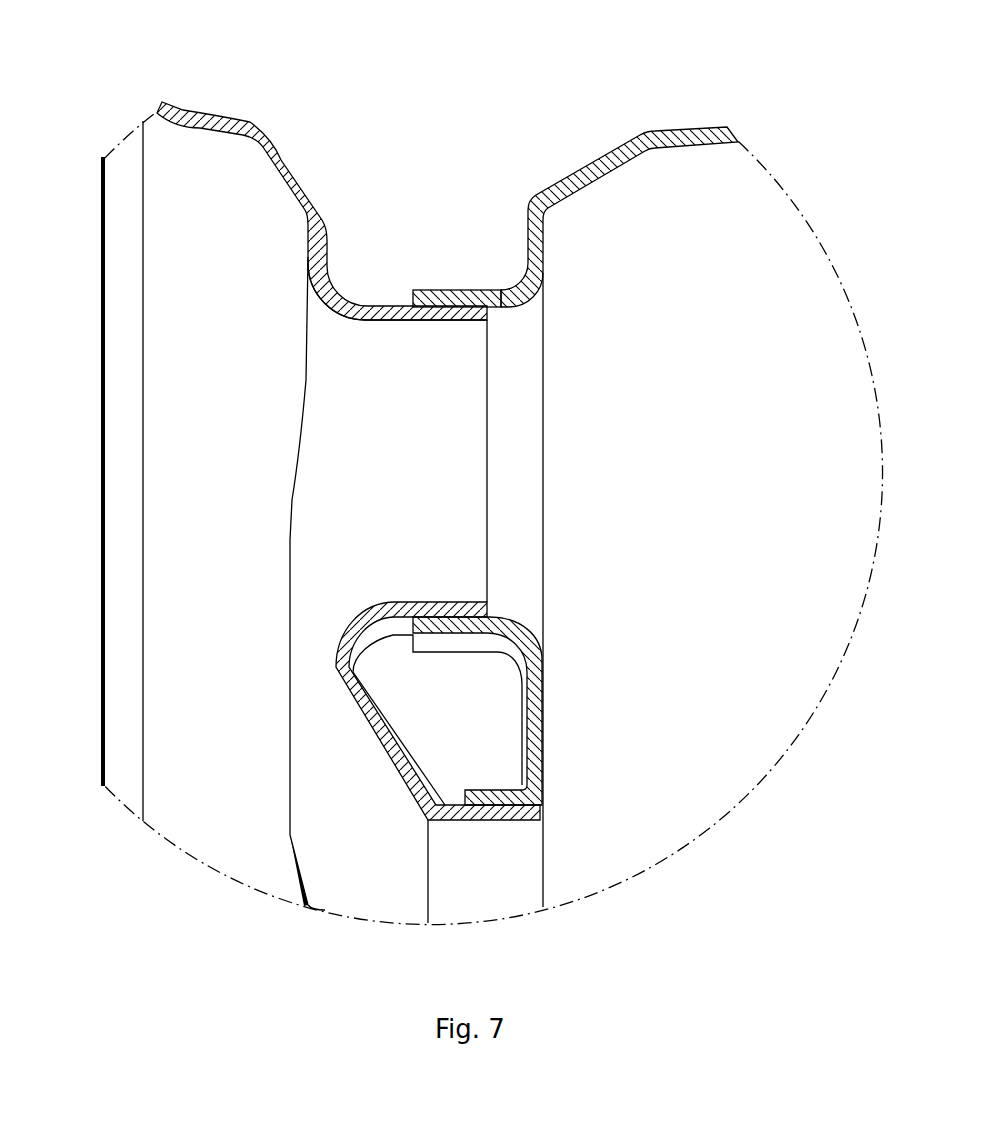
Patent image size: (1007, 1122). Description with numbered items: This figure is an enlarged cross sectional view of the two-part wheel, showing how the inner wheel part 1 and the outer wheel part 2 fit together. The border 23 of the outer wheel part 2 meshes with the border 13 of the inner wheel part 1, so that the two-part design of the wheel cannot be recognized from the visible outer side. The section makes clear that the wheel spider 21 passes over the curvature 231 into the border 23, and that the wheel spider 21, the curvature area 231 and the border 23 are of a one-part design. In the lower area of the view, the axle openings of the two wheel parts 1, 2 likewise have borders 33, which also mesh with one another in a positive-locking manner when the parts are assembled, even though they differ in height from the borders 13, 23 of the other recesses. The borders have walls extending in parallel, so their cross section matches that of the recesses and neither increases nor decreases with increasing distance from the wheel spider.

The inner wheel part 1 is at (648, 104).
The outer wheel part 2 is at (210, 84).
The border 13 is at (463, 298).
The wheel spider 21 is at (308, 253).
The border 23 is at (395, 305).
The curvature 231 is at (320, 305).
The border 33 is at (495, 797).